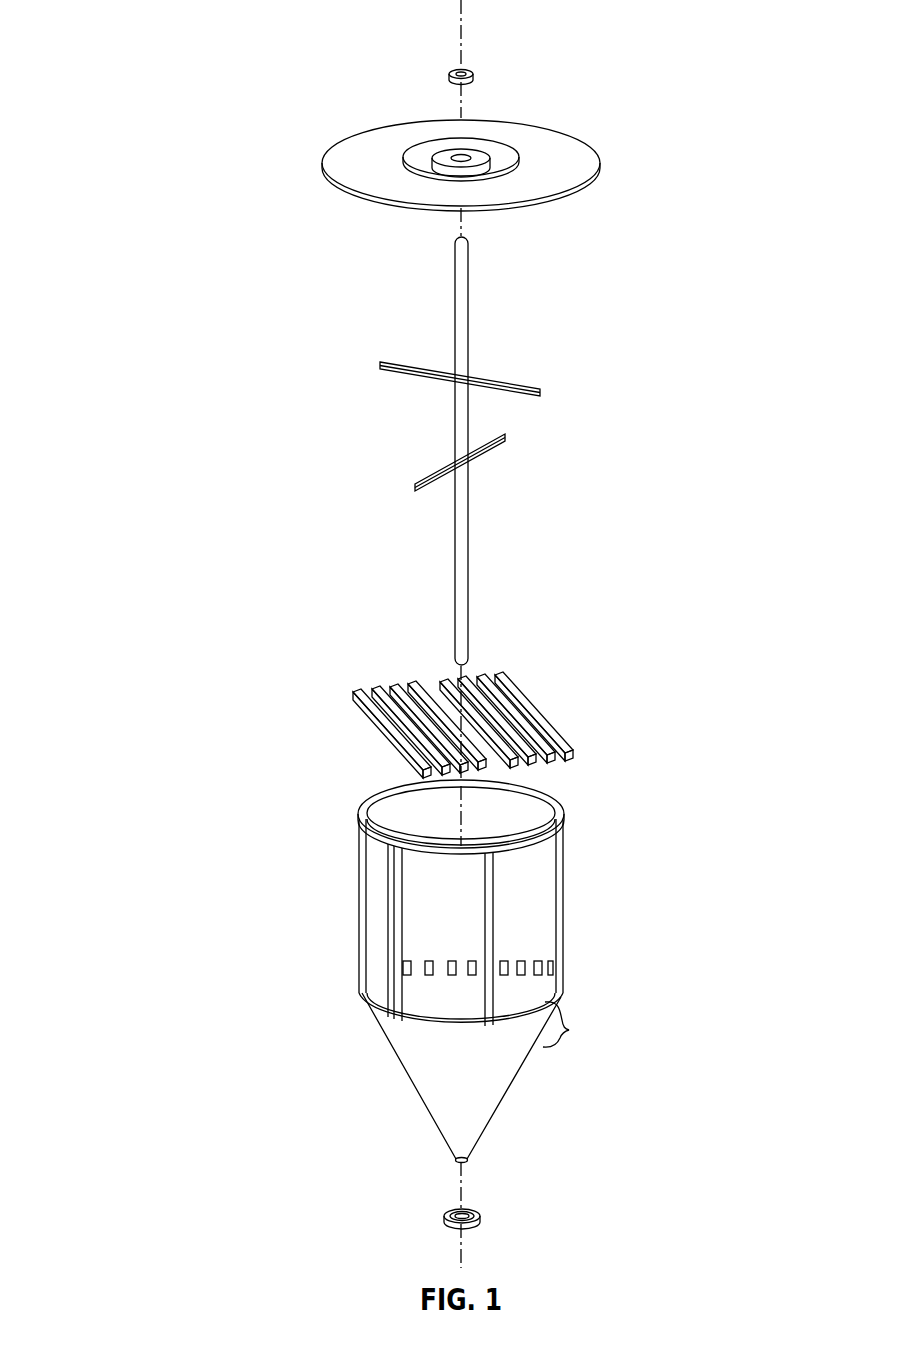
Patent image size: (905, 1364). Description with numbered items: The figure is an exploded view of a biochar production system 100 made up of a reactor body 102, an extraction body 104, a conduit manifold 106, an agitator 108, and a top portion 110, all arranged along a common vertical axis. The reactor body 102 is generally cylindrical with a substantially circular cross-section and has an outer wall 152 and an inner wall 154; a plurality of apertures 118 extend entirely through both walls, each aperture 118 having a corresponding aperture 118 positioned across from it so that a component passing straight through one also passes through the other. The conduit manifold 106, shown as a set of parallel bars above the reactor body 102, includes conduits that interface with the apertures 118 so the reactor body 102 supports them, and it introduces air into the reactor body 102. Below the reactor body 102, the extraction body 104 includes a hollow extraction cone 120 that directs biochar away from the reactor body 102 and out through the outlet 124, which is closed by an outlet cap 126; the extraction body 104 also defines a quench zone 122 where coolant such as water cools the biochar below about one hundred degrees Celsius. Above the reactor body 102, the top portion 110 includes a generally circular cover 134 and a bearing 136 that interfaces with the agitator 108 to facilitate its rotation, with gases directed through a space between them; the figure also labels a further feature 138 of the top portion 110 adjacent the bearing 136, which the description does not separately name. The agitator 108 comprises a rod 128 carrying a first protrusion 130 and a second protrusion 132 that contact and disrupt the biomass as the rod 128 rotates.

The biochar production system 100 is at (267, 38).
The reactor body 102 is at (336, 840).
The extraction body 104 is at (391, 1135).
The conduit manifold 106 is at (365, 656).
The agitator 108 is at (347, 368).
The top portion 110 is at (629, 71).
The apertures 118 is at (404, 967).
The extraction cone 120 is at (487, 1087).
The quench zone 122 is at (585, 1025).
The outlet 124 is at (468, 1161).
The outlet cap 126 is at (453, 1214).
The rod 128 is at (466, 540).
The first protrusion 130 is at (447, 473).
The second protrusion 132 is at (505, 386).
The cover 134 is at (568, 172).
The bearing 136 is at (441, 152).
The recess 138 is at (497, 160).
The outer wall 152 is at (372, 908).
The inner wall 154 is at (522, 810).